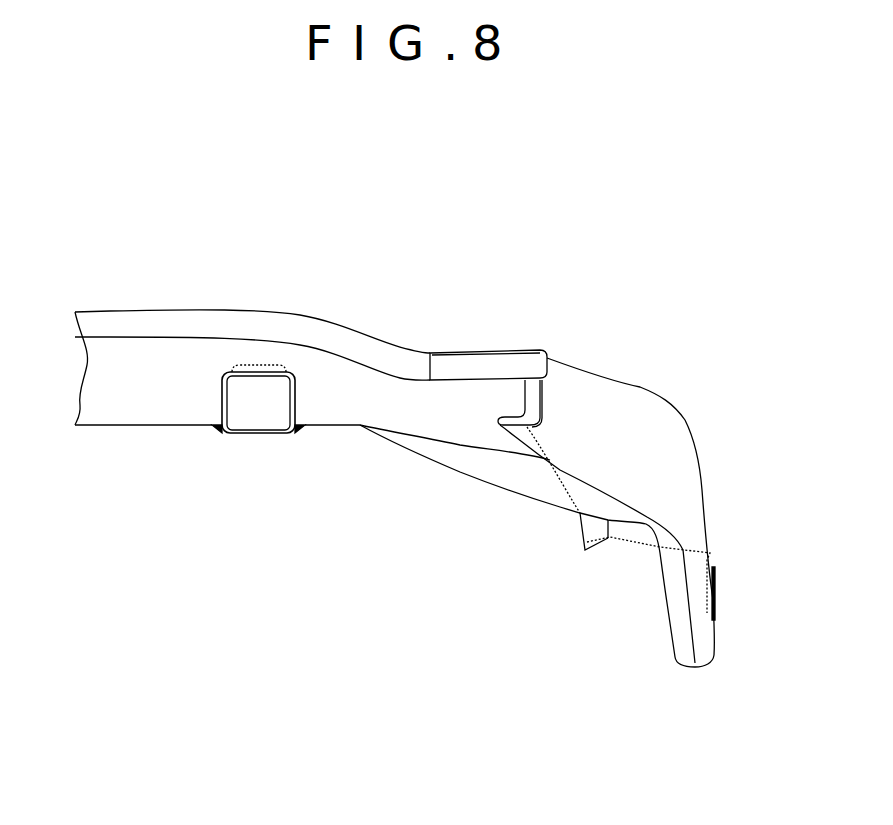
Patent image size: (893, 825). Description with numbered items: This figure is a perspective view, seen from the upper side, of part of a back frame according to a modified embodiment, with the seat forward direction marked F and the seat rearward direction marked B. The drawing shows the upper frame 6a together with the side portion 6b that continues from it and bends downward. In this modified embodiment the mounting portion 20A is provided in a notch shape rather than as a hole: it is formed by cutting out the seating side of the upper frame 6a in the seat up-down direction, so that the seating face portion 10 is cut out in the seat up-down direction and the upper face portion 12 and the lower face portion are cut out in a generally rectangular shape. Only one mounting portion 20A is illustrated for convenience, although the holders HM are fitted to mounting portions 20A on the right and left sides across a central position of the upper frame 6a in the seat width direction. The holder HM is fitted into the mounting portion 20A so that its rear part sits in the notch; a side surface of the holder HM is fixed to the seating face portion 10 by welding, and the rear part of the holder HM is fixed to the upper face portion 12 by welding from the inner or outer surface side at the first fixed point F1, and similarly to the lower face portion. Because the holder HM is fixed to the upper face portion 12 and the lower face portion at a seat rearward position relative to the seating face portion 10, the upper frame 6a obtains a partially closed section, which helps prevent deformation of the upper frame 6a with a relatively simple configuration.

The upper frame 6a is at (111, 428).
The front frame side portion 6b is at (663, 395).
The upper face portion 12 is at (148, 383).
The seating face portion 10 is at (183, 427).
The mounting portion 20A is at (222, 400).
The holder HM is at (270, 436).
The first fixed point F1 is at (267, 365).
The backward direction B is at (268, 222).
The forward direction F is at (272, 610).